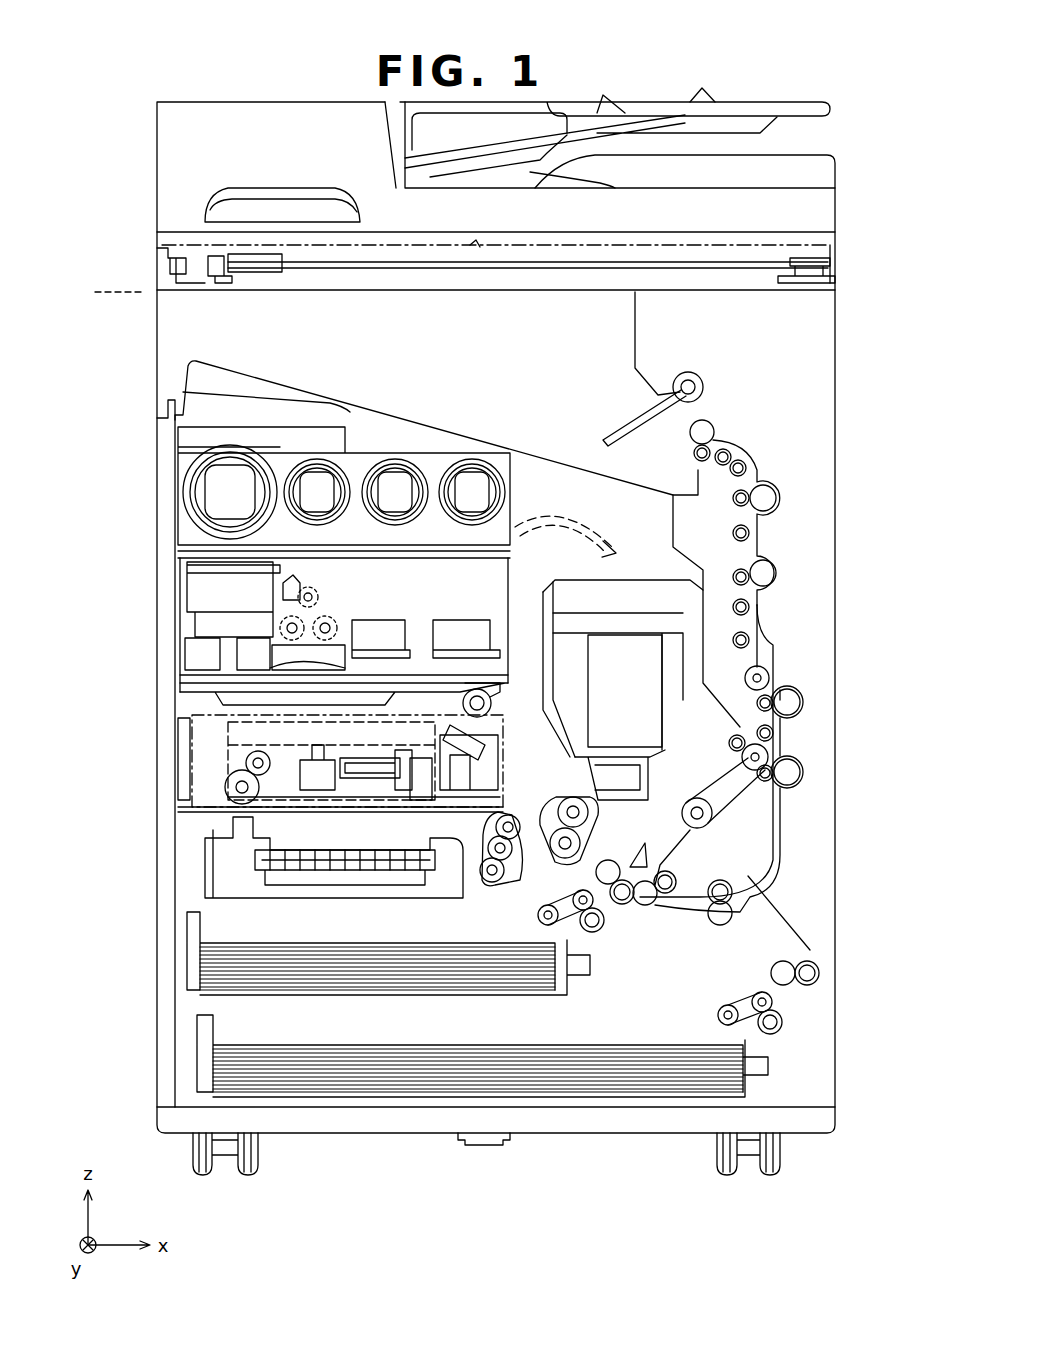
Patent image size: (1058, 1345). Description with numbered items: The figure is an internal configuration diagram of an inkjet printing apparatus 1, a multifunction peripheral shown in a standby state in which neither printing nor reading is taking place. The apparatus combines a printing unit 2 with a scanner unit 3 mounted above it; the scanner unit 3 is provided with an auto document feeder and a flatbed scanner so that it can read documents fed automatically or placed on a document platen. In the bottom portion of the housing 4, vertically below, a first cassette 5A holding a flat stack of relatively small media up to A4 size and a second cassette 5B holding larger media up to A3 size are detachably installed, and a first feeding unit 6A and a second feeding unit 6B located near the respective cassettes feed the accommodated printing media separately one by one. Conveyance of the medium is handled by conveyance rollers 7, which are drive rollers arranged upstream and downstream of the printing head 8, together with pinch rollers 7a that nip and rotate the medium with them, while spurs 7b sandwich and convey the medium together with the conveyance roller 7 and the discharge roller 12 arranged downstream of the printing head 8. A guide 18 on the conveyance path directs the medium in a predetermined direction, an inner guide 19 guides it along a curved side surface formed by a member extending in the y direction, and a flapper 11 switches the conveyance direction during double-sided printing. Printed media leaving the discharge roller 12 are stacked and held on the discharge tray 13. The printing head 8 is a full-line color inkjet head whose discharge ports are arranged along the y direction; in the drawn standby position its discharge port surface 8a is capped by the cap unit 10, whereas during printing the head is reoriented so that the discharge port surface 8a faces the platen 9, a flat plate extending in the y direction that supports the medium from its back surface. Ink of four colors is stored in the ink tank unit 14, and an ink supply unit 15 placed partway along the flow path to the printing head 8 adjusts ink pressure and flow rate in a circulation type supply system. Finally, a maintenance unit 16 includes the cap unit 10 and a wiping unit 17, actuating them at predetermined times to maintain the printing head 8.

The printing apparatus 1 is at (792, 72).
The printing unit 2 is at (80, 296).
The scanner unit 3 is at (80, 98).
The housing 4 is at (838, 372).
The first cassette 5A is at (195, 958).
The second cassette 5B is at (205, 1062).
The first feeding unit 6A is at (598, 933).
The second feeding unit 6B is at (784, 1024).
The conveyance rollers 7 is at (790, 772).
The pinch rollers 7a is at (716, 904).
The spurs 7b is at (755, 605).
The printing head 8 is at (770, 690).
The discharge port surface 8a is at (770, 793).
The platen 9 is at (740, 800).
The cap unit 10 is at (750, 820).
The flapper 11 is at (765, 652).
The discharge roller 12 is at (708, 420).
The discharge tray 13 is at (440, 429).
The ink tank unit 14 is at (186, 466).
The ink supply unit 15 is at (190, 628).
The maintenance unit 16 is at (200, 858).
The wiping unit 17 is at (200, 737).
The guide 18 is at (760, 536).
The inner guide 19 is at (745, 868).